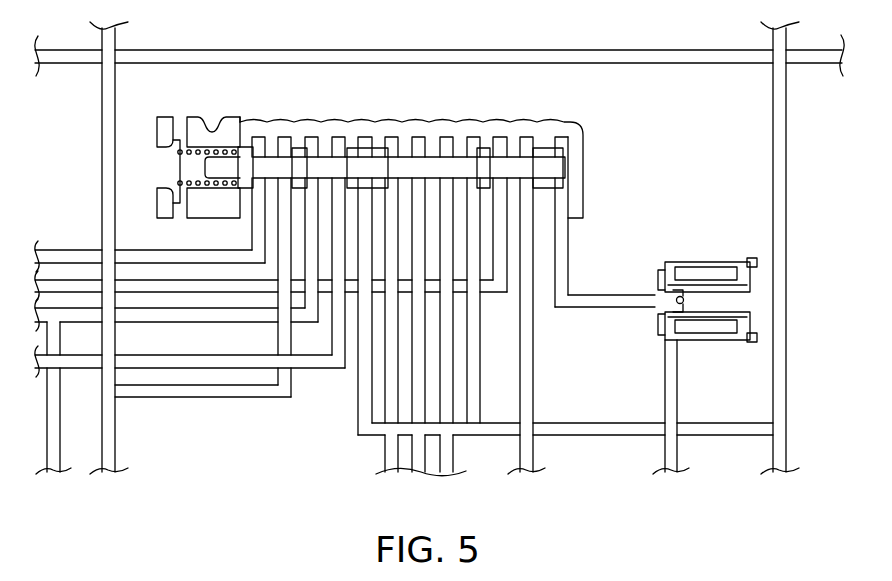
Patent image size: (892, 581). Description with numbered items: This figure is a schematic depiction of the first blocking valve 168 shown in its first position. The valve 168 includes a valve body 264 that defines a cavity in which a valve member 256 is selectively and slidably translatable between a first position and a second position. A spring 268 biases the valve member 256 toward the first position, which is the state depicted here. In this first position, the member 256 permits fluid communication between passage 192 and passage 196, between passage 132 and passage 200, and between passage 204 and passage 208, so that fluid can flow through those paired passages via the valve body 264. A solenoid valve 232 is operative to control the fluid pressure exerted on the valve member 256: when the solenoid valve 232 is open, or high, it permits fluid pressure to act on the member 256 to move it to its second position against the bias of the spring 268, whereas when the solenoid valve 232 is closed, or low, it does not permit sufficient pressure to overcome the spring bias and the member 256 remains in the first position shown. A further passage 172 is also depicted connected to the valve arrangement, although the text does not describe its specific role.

The passage 132 is at (487, 385).
The first blocking valve 168 is at (527, 118).
The fluid passage 172 is at (310, 369).
The passage 192 is at (533, 352).
The passage 196 is at (498, 297).
The passage 200 is at (453, 453).
The passage 204 is at (418, 460).
The passage 208 is at (392, 443).
The solenoid valve 232 is at (718, 345).
The valve member 256 is at (247, 152).
The valve body 264 is at (460, 135).
The spring 268 is at (197, 187).